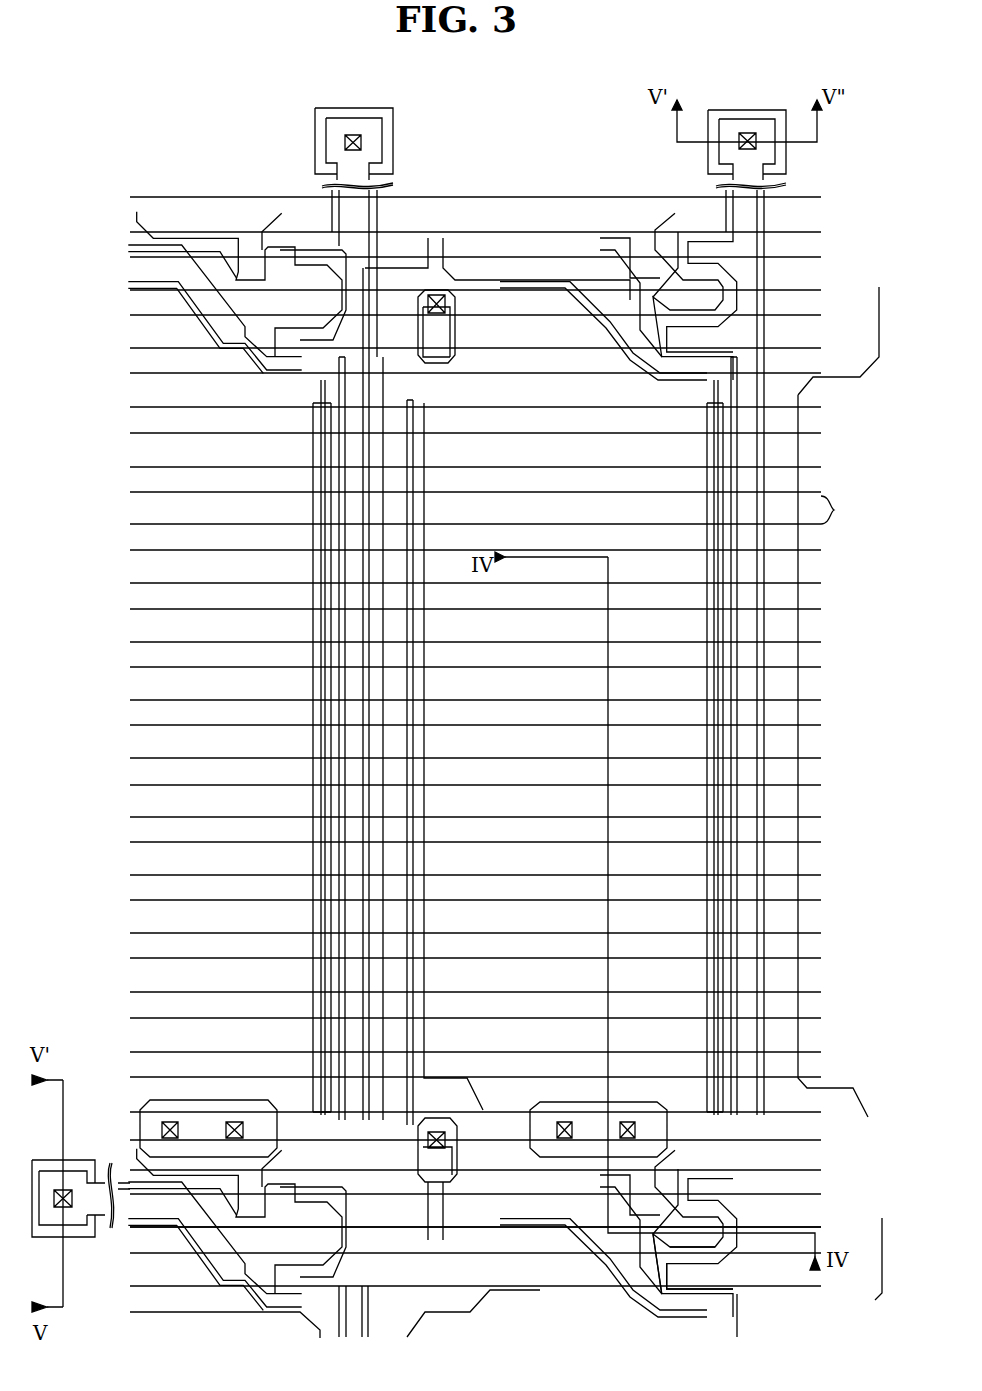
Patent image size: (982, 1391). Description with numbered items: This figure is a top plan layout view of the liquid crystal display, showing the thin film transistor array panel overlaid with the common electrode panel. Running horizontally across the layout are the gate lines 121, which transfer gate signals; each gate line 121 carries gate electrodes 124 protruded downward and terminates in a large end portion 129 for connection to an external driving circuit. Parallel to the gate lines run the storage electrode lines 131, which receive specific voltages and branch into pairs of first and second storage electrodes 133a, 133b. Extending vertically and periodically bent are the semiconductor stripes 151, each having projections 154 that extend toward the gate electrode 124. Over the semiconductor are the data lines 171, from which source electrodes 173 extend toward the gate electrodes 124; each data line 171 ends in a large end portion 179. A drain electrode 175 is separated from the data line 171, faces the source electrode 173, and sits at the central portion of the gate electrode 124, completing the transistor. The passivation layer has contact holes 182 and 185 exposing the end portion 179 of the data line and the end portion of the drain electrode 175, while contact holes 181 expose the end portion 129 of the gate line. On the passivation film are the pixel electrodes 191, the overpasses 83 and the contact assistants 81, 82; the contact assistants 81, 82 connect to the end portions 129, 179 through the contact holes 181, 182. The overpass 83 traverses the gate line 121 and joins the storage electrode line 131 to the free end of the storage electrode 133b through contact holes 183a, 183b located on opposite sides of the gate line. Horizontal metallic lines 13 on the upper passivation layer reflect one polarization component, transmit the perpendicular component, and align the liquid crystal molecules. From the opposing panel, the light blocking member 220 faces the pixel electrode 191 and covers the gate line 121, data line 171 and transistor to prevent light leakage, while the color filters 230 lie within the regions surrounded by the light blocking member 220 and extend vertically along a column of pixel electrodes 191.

The metallic lines 13 is at (836, 510).
The contact assistant 81 is at (52, 1240).
The contact assistant 82 is at (786, 176).
The overpass 83 is at (452, 328).
The gate line 121 is at (548, 1229).
The gate electrode 124 is at (760, 1240).
The end portion 129 is at (62, 1172).
The storage electrode line 131 is at (797, 1110).
The first storage electrode 133a is at (700, 480).
The second storage electrode 133b is at (423, 478).
The semiconductor stripe 151 is at (762, 600).
The projection 154 is at (655, 1265).
The data line 171 is at (758, 566).
The source electrode 173 is at (692, 1290).
The drain electrode 175 is at (665, 1240).
The end portion 179 is at (712, 160).
The contact hole 181 is at (65, 1210).
The contact hole 182 is at (748, 132).
The contact hole 183a is at (432, 1130).
The contact hole 183b is at (447, 305).
The contact hole 185 is at (627, 1120).
The pixel electrode 191 is at (748, 655).
The light blocking member 220 is at (320, 495).
The color filter 230 is at (500, 633).